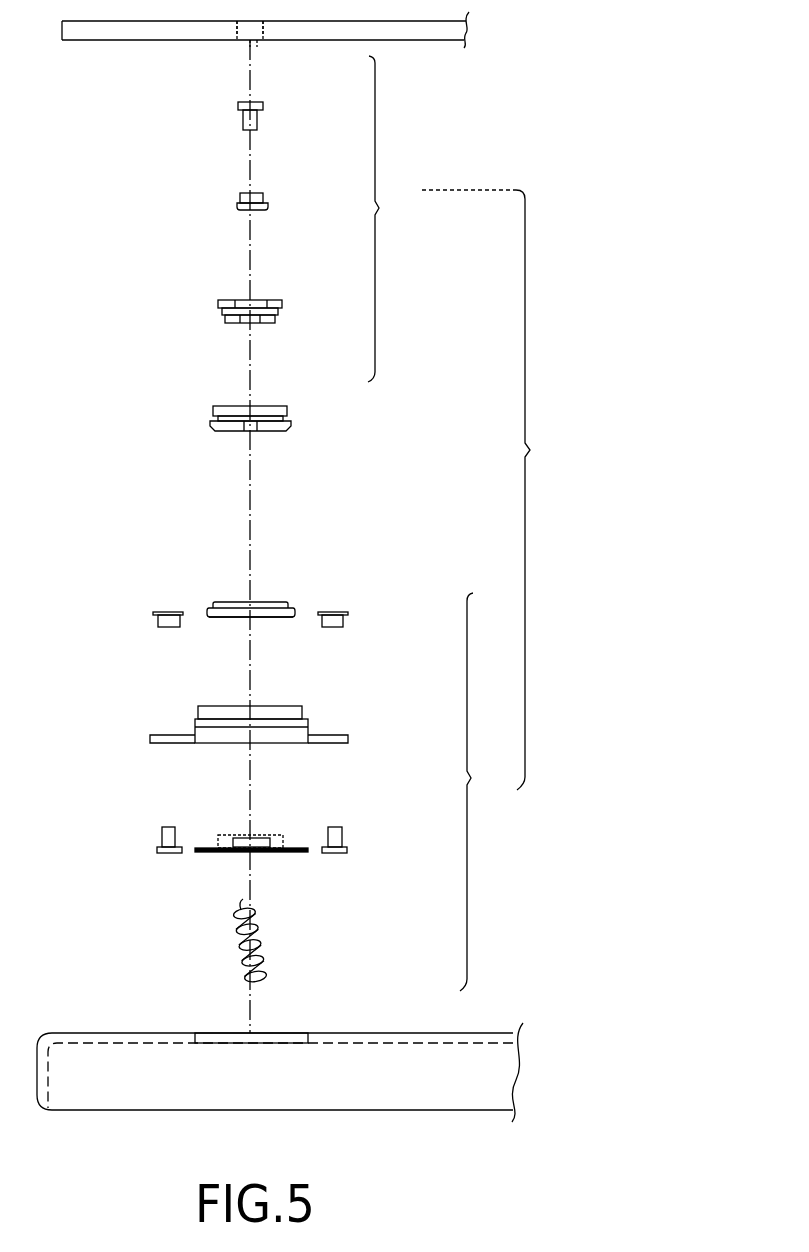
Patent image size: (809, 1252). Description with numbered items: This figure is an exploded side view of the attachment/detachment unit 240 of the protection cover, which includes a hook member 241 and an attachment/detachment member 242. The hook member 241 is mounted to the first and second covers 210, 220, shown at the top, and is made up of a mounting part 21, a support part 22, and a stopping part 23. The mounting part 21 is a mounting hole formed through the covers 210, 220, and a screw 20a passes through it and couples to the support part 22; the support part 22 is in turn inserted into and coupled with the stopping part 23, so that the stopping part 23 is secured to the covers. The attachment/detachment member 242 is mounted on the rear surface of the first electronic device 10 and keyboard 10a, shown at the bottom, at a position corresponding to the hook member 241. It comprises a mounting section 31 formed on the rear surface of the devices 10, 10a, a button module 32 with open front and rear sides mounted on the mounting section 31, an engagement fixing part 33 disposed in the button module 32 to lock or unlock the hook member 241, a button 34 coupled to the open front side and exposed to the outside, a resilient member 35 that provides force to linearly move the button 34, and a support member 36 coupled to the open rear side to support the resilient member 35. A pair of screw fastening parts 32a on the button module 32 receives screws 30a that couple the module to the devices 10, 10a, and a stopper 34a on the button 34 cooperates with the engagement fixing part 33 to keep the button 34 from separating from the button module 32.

The first cover 210 is at (265, 58).
The second cover 220 is at (118, 37).
The mounting part 21 is at (257, 43).
The screw 20a is at (263, 197).
The support part 22 is at (282, 303).
The stopping part 23 is at (273, 405).
The hook member 241 is at (393, 219).
The attachment/detachment unit 240 is at (497, 490).
The attachment/detachment member 242 is at (485, 792).
The button 34 is at (283, 601).
The stopper 34a is at (282, 617).
The screws 30a is at (168, 830).
The engagement fixing part 33 is at (280, 710).
The button module 32 is at (308, 722).
The screw fastening parts 32a is at (175, 741).
The support member 36 is at (282, 852).
The resilient member 35 is at (262, 927).
The mounting section 31 is at (268, 1035).
The first electronic device 10 is at (280, 1094).
The keyboard 10a is at (118, 1095).